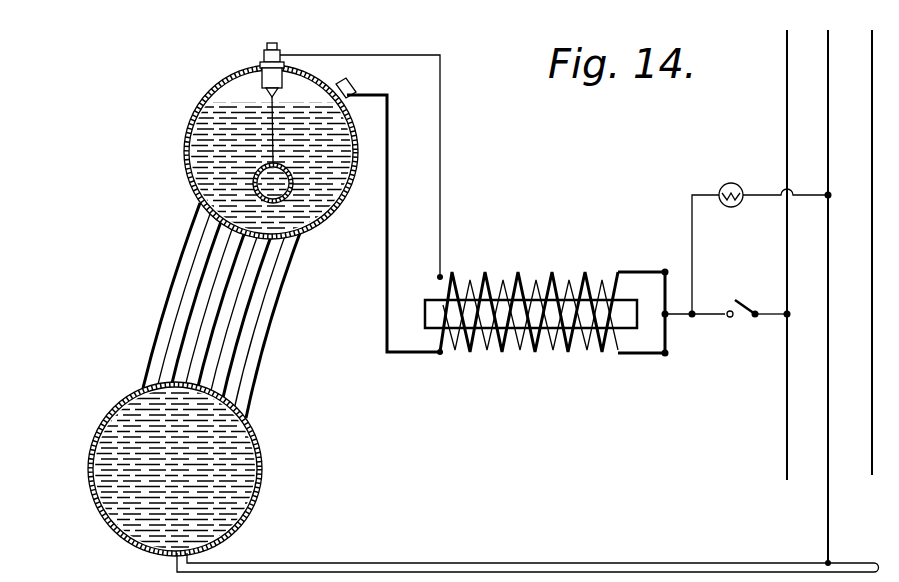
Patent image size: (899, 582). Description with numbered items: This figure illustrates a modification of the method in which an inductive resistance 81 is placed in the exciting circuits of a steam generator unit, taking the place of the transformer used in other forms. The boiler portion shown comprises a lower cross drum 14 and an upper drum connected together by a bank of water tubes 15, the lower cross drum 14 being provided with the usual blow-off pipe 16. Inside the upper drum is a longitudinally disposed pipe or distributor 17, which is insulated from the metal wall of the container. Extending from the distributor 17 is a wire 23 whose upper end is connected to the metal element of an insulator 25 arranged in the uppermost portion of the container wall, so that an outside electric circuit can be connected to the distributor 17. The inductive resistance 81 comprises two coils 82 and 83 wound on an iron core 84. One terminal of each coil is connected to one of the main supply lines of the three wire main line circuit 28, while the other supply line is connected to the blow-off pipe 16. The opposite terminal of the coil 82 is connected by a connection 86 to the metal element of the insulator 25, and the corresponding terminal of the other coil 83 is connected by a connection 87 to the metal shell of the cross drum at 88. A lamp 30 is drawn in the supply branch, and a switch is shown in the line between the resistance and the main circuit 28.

The cross drum 14 is at (90, 444).
The water tubes 15 is at (188, 305).
The blow-off pipe 16 is at (356, 562).
The distributor 17 is at (250, 184).
The wire 23 is at (262, 100).
The insulator 25 is at (258, 60).
The three wire main line circuit 28 is at (825, 105).
The signal lamp 30 is at (728, 183).
The inductive resistance 81 is at (533, 315).
The coil 82 is at (456, 356).
The coil 83 is at (540, 356).
The iron core 84 is at (426, 300).
The connection 86 is at (442, 133).
The connection 87 is at (386, 258).
The metal shell connection point 88 is at (350, 88).